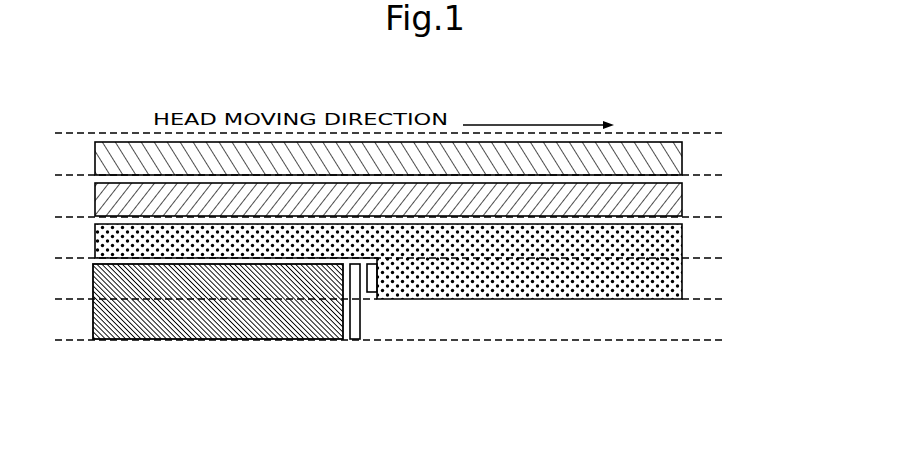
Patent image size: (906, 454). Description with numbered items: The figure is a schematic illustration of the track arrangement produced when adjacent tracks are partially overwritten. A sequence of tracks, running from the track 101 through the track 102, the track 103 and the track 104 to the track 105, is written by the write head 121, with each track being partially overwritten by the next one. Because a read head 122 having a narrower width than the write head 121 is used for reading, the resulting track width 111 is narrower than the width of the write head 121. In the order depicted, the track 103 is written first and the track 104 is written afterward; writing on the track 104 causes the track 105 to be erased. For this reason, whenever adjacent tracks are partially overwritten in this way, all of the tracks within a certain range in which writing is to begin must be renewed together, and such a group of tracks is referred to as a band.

The track 101 is at (682, 158).
The track 102 is at (682, 200).
The track 103 is at (682, 241).
The track 104 is at (682, 282).
The track 105 is at (678, 324).
The track width 111 is at (78, 262).
The write head 121 is at (355, 340).
The read head 122 is at (372, 292).